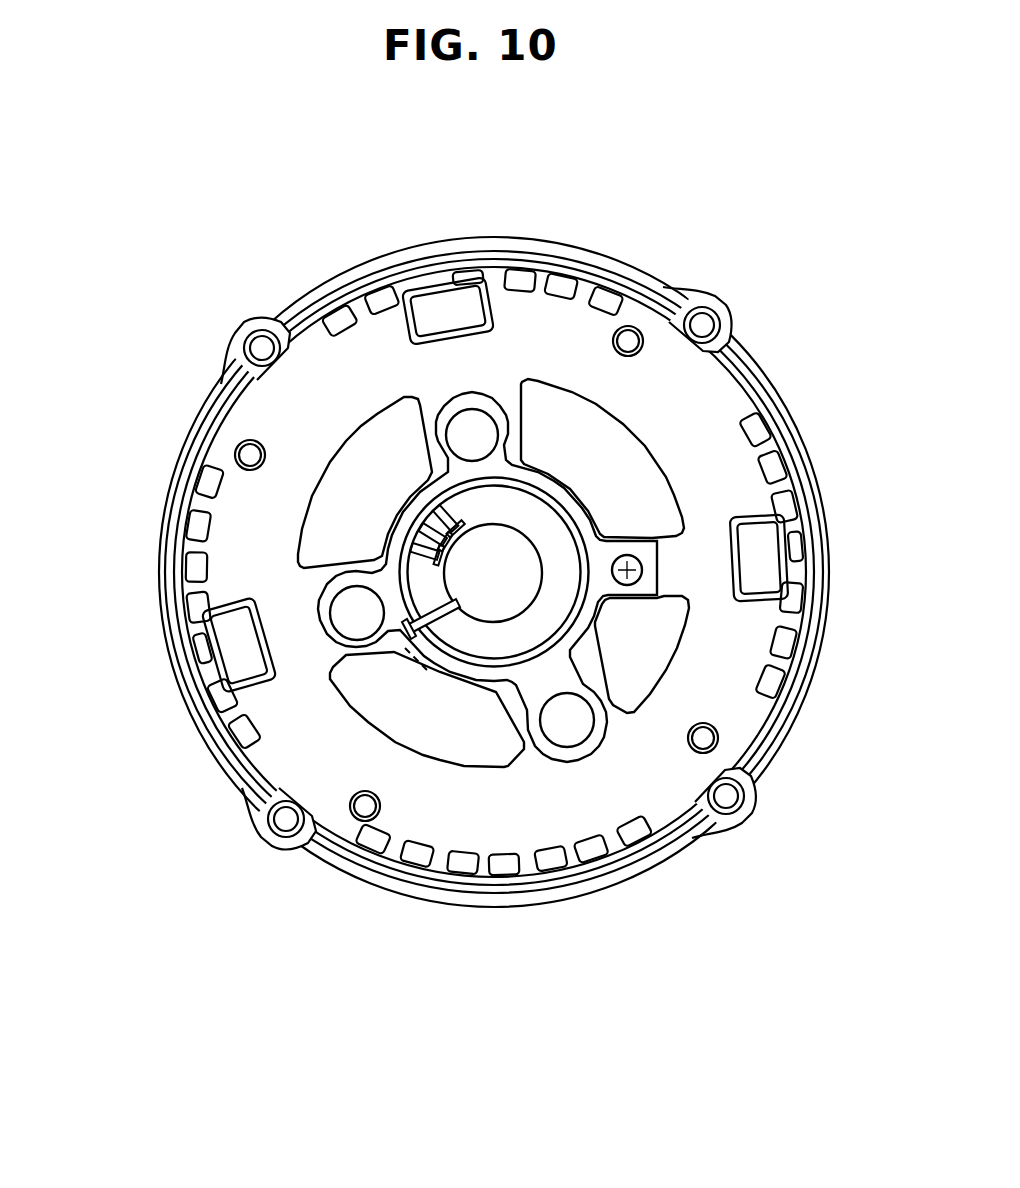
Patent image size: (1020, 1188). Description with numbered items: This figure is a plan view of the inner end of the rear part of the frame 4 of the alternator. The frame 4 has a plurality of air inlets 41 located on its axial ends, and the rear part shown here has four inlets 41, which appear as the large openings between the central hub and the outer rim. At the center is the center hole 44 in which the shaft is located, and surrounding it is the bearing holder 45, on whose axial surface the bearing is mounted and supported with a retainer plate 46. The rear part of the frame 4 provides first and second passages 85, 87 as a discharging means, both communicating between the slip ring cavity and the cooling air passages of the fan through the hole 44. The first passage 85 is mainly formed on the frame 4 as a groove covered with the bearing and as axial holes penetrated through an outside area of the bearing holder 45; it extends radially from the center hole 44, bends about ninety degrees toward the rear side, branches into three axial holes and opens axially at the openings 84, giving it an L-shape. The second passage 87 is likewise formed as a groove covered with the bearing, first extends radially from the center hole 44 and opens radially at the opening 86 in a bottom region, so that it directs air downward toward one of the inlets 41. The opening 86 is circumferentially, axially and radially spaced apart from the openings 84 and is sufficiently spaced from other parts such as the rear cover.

The frame 4 is at (626, 272).
The air inlets 41 is at (627, 453).
The center hole 44 is at (507, 607).
The bearing holder 45 is at (565, 583).
The retainer plate 46 is at (600, 592).
The openings 84 is at (247, 425).
The first passage 85 is at (437, 505).
The opening 86 is at (400, 676).
The second passage 87 is at (462, 620).